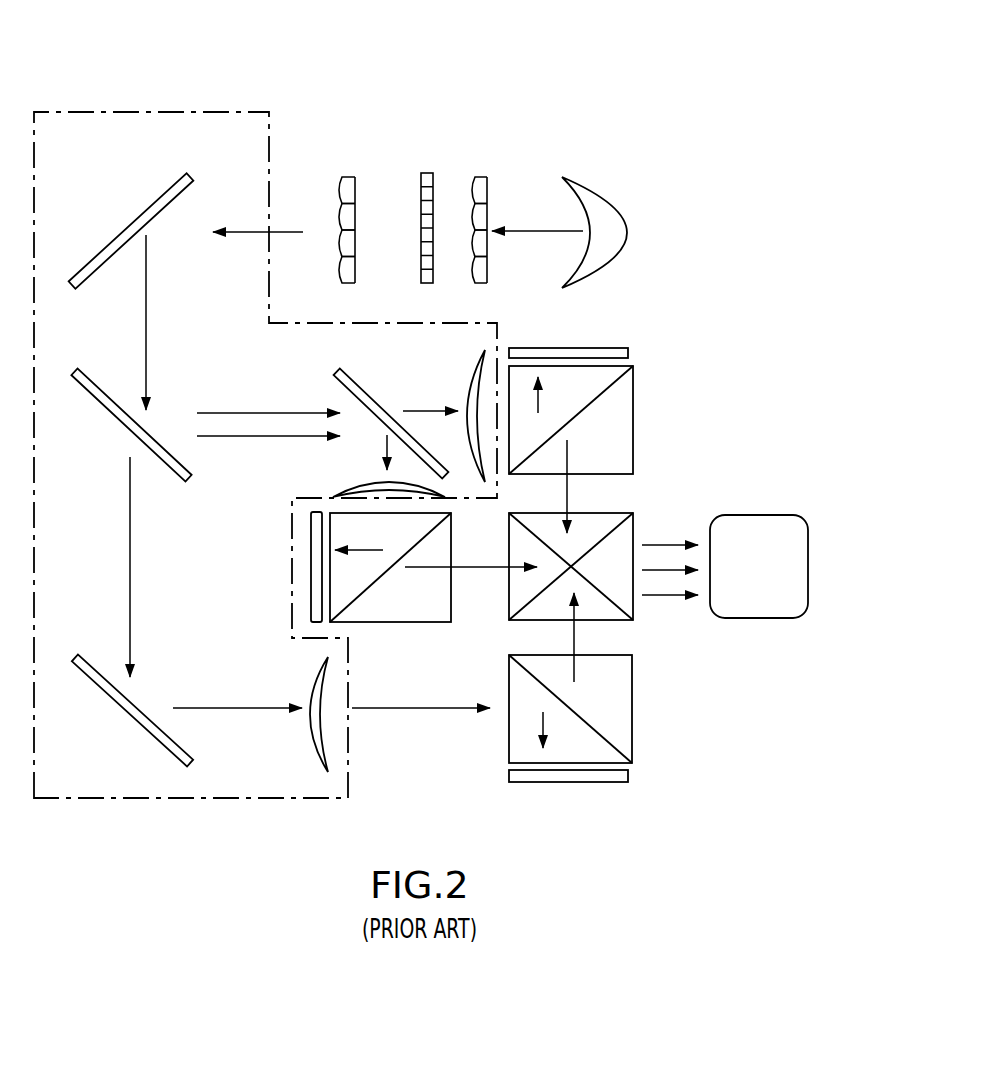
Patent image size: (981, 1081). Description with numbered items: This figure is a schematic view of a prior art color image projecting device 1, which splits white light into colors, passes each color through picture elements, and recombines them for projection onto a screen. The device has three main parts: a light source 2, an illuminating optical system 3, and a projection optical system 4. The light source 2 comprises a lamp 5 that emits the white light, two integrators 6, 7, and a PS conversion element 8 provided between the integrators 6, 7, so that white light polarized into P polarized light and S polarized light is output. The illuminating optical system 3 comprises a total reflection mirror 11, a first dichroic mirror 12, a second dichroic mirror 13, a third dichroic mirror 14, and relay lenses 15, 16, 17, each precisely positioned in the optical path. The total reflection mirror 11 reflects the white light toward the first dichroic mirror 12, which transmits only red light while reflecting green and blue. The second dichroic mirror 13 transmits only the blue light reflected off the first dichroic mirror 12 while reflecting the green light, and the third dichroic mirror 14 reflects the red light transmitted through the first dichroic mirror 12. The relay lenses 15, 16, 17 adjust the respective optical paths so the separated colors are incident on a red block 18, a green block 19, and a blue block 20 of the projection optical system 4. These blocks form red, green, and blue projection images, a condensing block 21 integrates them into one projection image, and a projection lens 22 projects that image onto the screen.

The projector 1 is at (740, 178).
The light source 2 is at (573, 150).
The illuminating optical system 3 is at (152, 112).
The projection optical system 4 is at (723, 437).
The lamp 5 is at (617, 202).
The integrator 6 is at (477, 177).
The integrator 7 is at (344, 177).
The PS conversion element 8 is at (424, 173).
The total reflection mirror 11 is at (145, 205).
The first dichroic mirror 12 is at (102, 385).
The second dichroic mirror 13 is at (340, 387).
The third dichroic mirror 14 is at (128, 715).
The relay lens 15 is at (470, 385).
The relay lens 16 is at (353, 485).
The relay lens 17 is at (313, 728).
The red block 18 is at (632, 695).
The green block 19 is at (412, 623).
The blue block 20 is at (633, 400).
The condensing block 21 is at (633, 527).
The projection lens 22 is at (758, 515).